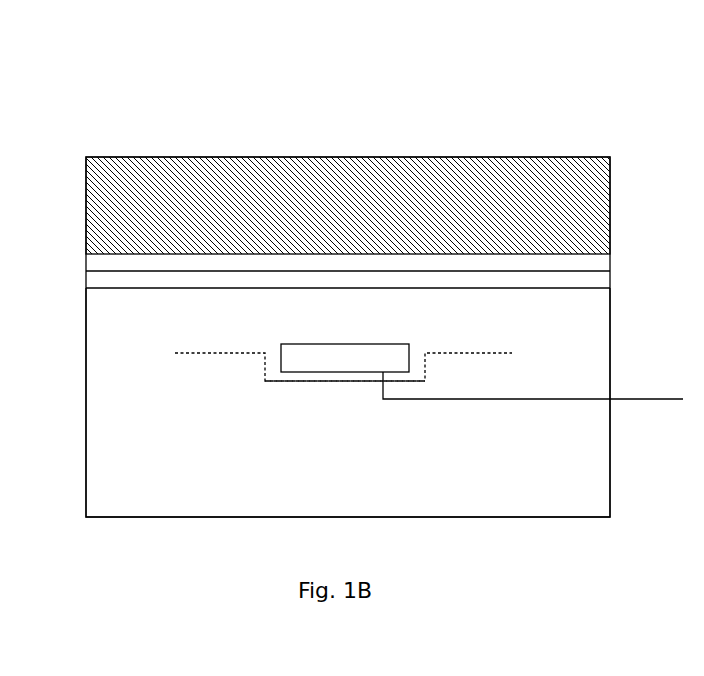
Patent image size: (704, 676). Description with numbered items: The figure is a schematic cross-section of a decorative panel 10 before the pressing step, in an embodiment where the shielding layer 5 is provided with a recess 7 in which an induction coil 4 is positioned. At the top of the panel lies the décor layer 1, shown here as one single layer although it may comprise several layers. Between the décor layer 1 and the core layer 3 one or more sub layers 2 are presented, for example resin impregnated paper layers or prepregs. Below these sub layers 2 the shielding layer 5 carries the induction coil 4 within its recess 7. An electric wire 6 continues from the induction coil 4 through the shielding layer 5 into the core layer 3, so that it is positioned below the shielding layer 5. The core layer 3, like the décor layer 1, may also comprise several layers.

The decorative panel 10 is at (360, 106).
The décor layer 1 is at (597, 188).
The resin impregnated paper/prepreg 2 is at (592, 257).
The core layer 3 is at (117, 468).
The induction coil 4 is at (362, 357).
The shielding layer 5 is at (215, 353).
The electric wire 6 is at (647, 399).
The recess 7 is at (286, 381).